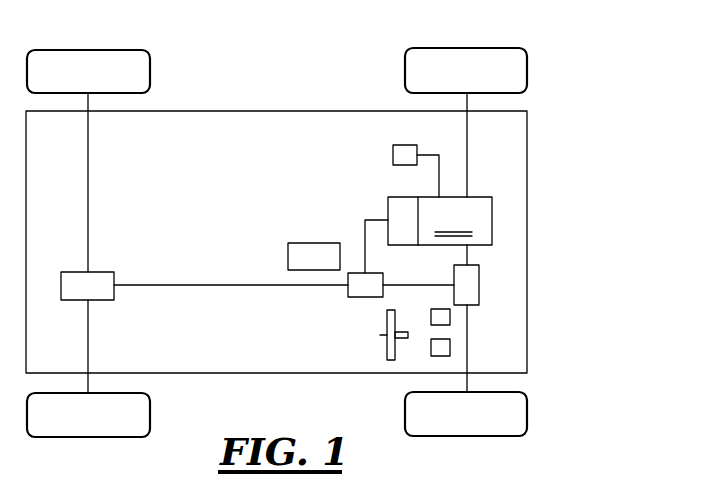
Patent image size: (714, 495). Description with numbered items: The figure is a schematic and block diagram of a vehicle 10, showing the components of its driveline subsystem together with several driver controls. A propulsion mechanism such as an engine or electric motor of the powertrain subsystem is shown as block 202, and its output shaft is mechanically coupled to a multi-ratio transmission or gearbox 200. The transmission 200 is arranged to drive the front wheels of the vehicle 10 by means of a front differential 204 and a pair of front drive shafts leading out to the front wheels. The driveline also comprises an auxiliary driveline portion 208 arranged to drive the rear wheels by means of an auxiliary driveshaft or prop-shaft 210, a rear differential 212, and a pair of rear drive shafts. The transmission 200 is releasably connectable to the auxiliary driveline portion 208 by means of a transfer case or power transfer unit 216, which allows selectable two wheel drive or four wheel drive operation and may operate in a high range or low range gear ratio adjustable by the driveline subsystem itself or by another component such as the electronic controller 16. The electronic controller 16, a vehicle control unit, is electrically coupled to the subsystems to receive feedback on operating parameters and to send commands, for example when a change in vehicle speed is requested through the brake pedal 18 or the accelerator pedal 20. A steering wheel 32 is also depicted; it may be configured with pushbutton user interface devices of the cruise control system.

The vehicle 10 is at (583, 151).
The electronic controller 16 is at (393, 150).
The brake pedal 18 is at (450, 317).
The accelerator pedal 20 is at (450, 347).
The steering wheel 32 is at (387, 328).
The multi-ratio transmission 200 is at (388, 203).
The propulsion mechanism 202 is at (440, 221).
The front differential 204 is at (470, 285).
The auxiliary driveline portion 208 is at (236, 314).
The auxiliary driveshaft or prop-shaft 210 is at (181, 283).
The rear differential 212 is at (68, 278).
The transfer case or power transfer unit 216 is at (348, 294).